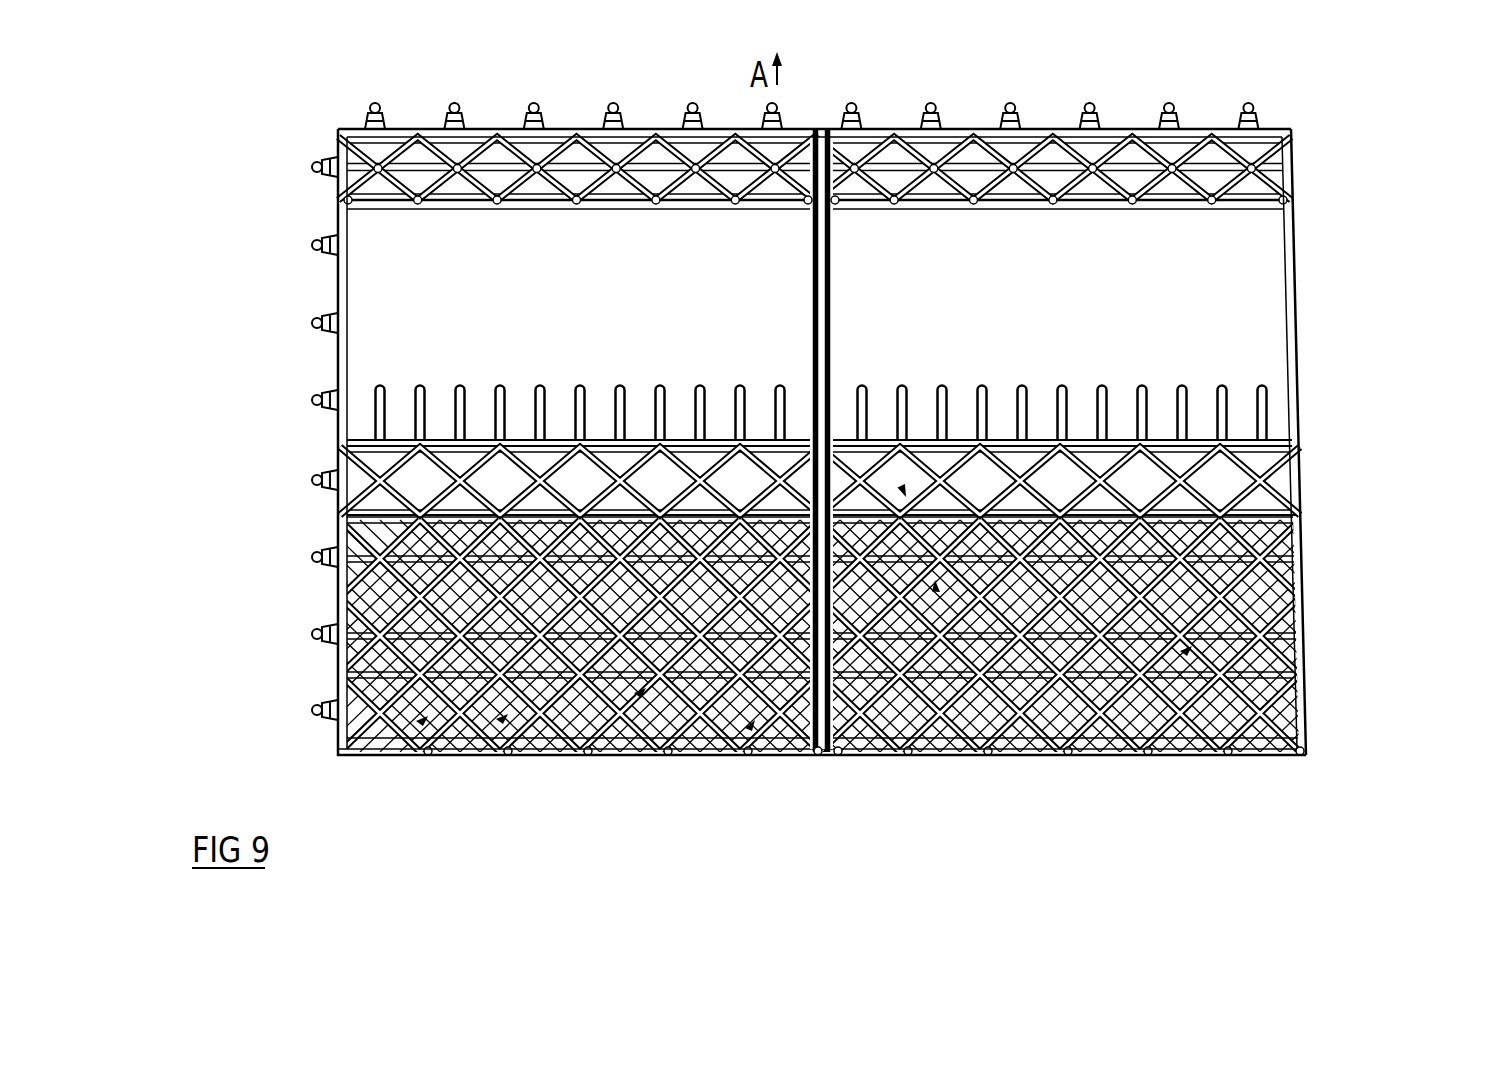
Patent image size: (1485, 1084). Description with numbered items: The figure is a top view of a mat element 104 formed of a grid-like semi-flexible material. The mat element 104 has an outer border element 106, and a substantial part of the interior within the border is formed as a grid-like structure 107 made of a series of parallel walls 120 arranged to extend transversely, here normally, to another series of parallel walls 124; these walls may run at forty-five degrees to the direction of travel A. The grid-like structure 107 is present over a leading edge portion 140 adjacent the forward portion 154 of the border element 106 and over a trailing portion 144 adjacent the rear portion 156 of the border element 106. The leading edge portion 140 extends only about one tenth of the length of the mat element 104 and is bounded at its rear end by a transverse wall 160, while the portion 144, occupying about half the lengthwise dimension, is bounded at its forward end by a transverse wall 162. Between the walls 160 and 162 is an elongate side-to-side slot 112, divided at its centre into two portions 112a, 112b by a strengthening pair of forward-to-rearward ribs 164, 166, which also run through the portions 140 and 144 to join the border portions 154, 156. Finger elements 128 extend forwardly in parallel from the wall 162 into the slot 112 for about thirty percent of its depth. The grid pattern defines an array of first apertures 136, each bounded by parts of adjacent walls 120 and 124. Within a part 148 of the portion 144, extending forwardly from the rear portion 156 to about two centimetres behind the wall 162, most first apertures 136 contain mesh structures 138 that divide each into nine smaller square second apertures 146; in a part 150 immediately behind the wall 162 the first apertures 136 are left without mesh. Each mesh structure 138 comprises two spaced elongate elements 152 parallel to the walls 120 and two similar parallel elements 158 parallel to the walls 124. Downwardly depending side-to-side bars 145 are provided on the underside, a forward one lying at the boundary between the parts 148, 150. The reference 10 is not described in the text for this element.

The mat element 104 is at (984, 100).
The outer border element 106 is at (484, 128).
The forward portion of the outer border element 154 is at (652, 132).
The leading edge portion 140 is at (858, 128).
The transverse wall 160 is at (650, 215).
The strengthening rib 164 is at (808, 238).
The strengthening rib 166 is at (827, 247).
The slot 112 is at (815, 273).
The slot portion 112a is at (578, 271).
The slot portion 112b is at (893, 335).
The finger elements 128 is at (498, 384).
The transverse wall 162 is at (565, 440).
The first apertures 136 is at (770, 488).
The parallel walls 124 is at (1028, 470).
The part of portion immediately behind wall 150 is at (757, 424).
The part of portion with mesh structures 148 is at (832, 590).
The portion 144 is at (832, 590).
The parallel walls 120 is at (1123, 670).
The downwardly depending bars 145 is at (985, 550).
The parallel elements of mesh structure 158 is at (1200, 580).
The rear portion of the outer border element 156 is at (523, 757).
The second apertures 146 is at (603, 757).
The mesh structures 138 is at (487, 757).
The flow direction arrows 10 is at (903, 493).
The grid-like structure 107 is at (1295, 545).
The elongate elements of mesh structure 152 is at (1298, 595).